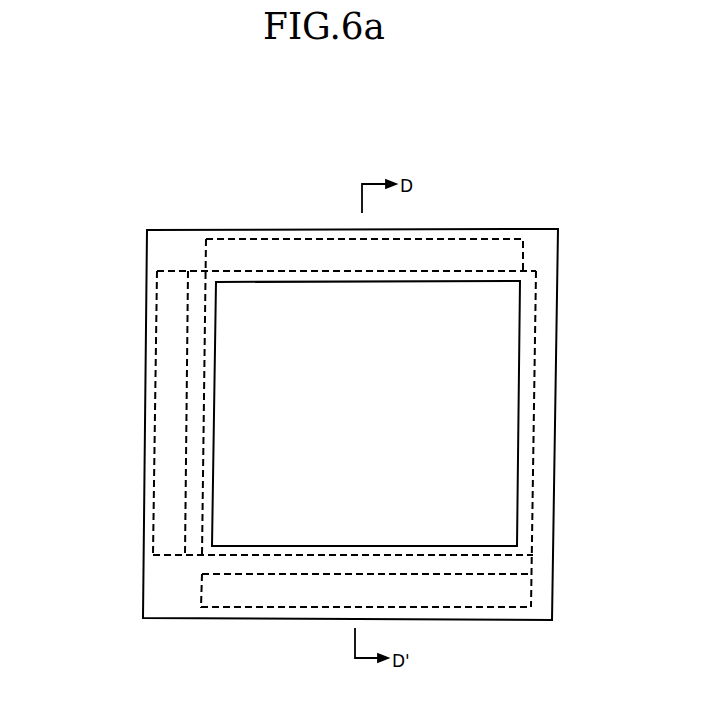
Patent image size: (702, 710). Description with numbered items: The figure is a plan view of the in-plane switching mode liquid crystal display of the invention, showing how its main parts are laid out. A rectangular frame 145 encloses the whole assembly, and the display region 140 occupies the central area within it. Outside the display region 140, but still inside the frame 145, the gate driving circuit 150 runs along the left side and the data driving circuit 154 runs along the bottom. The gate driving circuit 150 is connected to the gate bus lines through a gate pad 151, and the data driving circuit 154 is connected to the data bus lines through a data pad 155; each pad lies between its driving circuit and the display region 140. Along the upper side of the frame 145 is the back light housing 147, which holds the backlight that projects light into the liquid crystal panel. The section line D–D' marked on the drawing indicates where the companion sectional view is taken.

The frame 145 is at (163, 247).
The back light housing 147 is at (402, 247).
The display region 140 is at (498, 379).
The gate driving circuit 150 is at (165, 376).
The gate pad 151 is at (193, 513).
The data pad 155 is at (300, 565).
The data driving circuit 154 is at (470, 592).